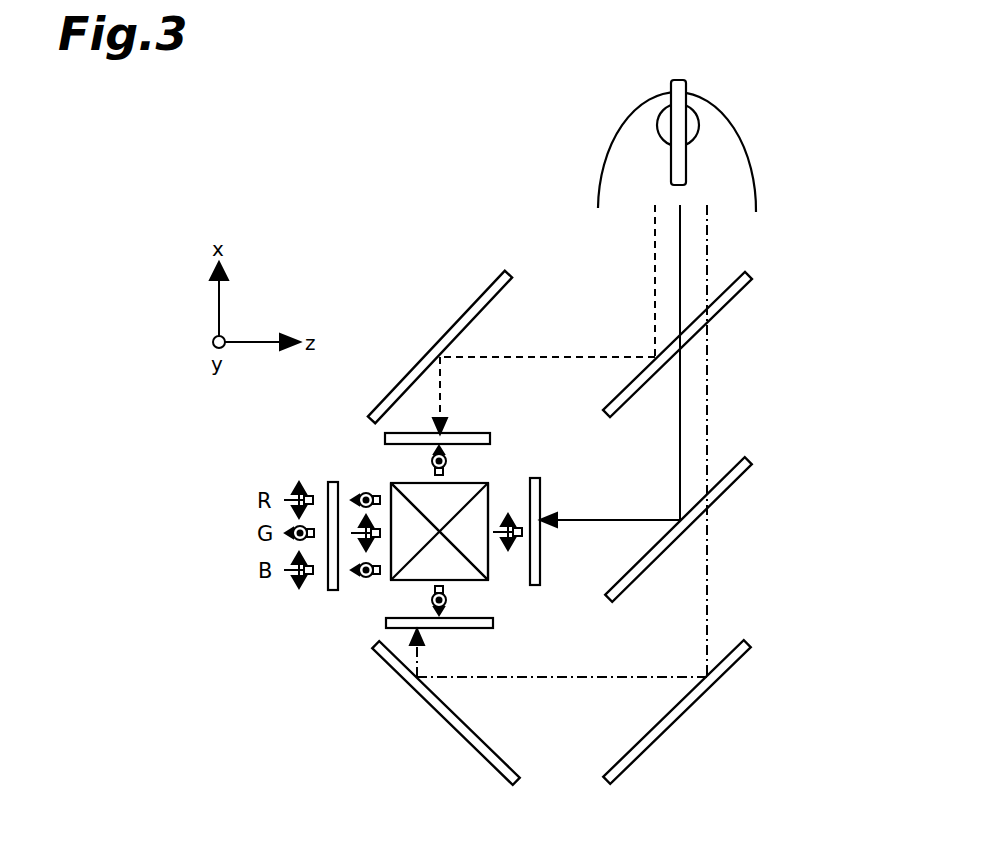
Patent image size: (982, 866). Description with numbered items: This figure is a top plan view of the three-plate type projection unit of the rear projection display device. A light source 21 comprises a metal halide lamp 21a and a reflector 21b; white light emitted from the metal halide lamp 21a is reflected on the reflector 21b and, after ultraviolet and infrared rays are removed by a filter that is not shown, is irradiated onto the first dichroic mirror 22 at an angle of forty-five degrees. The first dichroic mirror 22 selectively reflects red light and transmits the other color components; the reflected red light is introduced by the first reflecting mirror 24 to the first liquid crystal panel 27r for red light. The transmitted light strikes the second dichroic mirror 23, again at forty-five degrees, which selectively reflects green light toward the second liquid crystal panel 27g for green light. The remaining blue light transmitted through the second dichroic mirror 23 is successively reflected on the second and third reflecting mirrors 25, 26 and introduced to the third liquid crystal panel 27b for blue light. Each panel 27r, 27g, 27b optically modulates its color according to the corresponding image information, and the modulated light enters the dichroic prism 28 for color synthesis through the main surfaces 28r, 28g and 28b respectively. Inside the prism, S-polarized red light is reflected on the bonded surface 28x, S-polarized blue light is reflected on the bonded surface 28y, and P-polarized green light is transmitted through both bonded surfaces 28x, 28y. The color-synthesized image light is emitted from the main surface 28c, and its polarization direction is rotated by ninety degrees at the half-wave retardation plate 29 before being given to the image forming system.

The light source 21 is at (649, 121).
The metal halide lamp 21a is at (697, 120).
The reflector 21b is at (617, 135).
The first dichroic mirror 22 is at (727, 300).
The second dichroic mirror 23 is at (730, 485).
The first reflecting mirror 24 is at (480, 306).
The second reflecting mirror 25 is at (690, 702).
The third reflecting mirror 26 is at (450, 727).
The first liquid crystal panel 27r is at (461, 433).
The second liquid crystal panel 27g is at (537, 567).
The third liquid crystal panel 27b is at (463, 630).
The dichroic prism 28 is at (459, 529).
The main surface 28r is at (470, 482).
The main surface 28g is at (490, 515).
The main surface 28b is at (470, 580).
The main surface 28c is at (388, 487).
The bonded surface 28x is at (404, 568).
The bonded surface 28y is at (450, 543).
The λ/2 retardation plate 29 is at (330, 483).